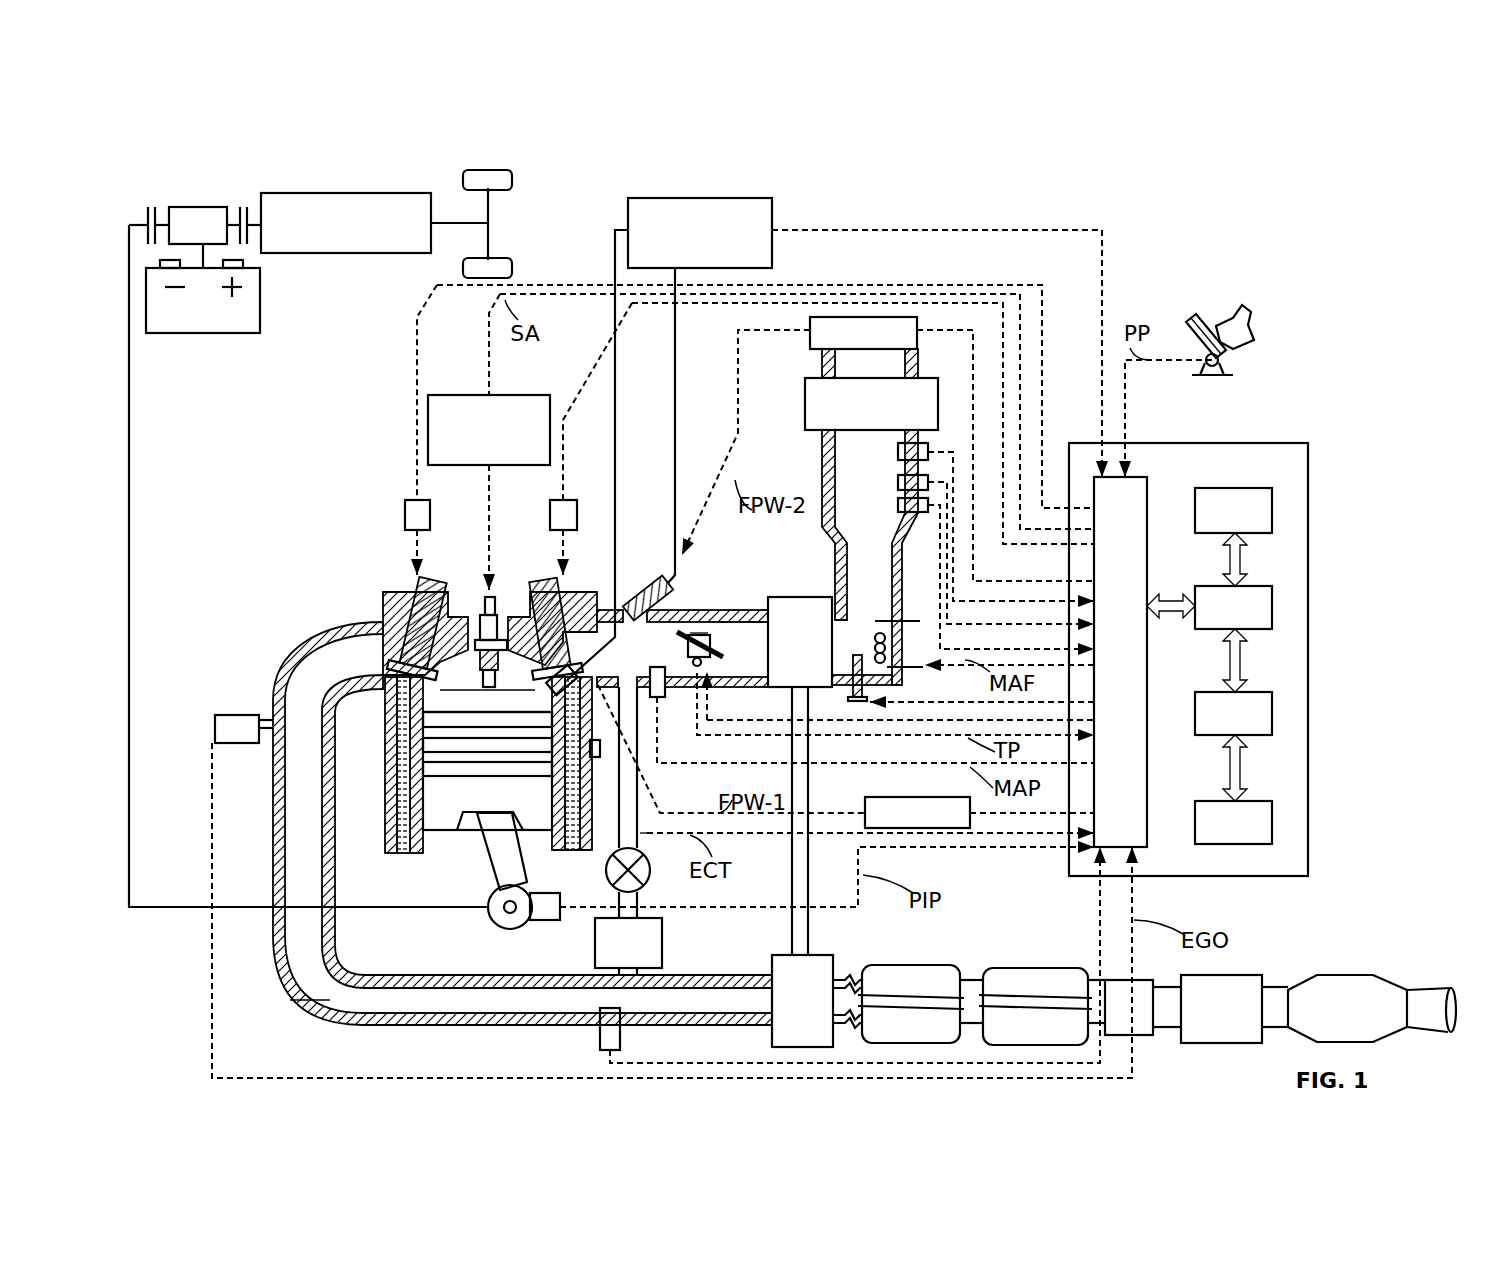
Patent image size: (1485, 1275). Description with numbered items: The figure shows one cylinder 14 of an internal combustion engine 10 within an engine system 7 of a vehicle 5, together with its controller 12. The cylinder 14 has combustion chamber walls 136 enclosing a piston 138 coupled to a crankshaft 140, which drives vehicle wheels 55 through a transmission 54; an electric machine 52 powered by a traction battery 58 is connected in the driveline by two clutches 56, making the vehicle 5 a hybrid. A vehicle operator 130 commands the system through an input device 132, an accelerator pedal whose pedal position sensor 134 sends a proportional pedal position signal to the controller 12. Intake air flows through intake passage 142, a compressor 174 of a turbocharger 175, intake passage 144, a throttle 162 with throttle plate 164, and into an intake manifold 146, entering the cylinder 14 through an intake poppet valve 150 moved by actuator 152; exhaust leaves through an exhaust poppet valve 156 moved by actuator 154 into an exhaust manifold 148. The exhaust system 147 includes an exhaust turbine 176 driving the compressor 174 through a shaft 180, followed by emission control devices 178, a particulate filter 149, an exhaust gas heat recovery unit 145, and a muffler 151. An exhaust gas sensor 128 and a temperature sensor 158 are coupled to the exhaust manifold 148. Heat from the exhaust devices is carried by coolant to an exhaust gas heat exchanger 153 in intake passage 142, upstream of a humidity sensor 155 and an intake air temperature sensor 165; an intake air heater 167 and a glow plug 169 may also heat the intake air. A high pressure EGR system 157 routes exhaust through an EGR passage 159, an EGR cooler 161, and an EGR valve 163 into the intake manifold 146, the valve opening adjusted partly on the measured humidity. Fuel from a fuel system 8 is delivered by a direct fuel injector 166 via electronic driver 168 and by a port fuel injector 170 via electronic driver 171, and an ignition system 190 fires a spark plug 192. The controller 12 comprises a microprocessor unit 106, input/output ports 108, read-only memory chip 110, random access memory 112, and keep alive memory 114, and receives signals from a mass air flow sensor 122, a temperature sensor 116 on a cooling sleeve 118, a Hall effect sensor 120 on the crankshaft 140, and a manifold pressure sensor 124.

The vehicle 5 is at (1405, 229).
The engine system 7 is at (302, 452).
The fuel system 8 is at (735, 199).
The internal combustion engine 10 is at (318, 585).
The controller 12 is at (1308, 462).
The cylinder 14 is at (394, 707).
The electric machine 52 is at (206, 207).
The transmission 54 is at (412, 253).
The vehicle wheels 55 is at (510, 190).
The clutches 56 is at (145, 212).
The traction battery 58 is at (195, 333).
The microprocessor unit 106 is at (1272, 600).
The input/output ports 108 is at (1148, 500).
The read-only memory chip 110 is at (1272, 505).
The random access memory 112 is at (1272, 715).
The keep alive memory 114 is at (1272, 820).
The temperature sensor 116 is at (596, 757).
The cooling sleeve 118 is at (562, 855).
The Hall effect sensor 120 is at (543, 920).
The mass air flow sensor 122 is at (898, 505).
The MAP sensor 124 is at (660, 715).
The exhaust gas sensor 128 is at (215, 718).
The vehicle operator 130 is at (1252, 326).
The input device 132 is at (1195, 340).
The pedal position sensor 134 is at (1225, 362).
The combustion chamber walls 136 is at (428, 840).
The piston 138 is at (470, 797).
The crankshaft 140 is at (502, 928).
The intake passage 142 is at (870, 557).
The intake passage 144 is at (744, 641).
The exhaust gas heat recovery unit 145 is at (1221, 1009).
The intake manifold 146 is at (682, 648).
The exhaust system 147 is at (291, 1036).
The exhaust manifold 148 is at (522, 823).
The particulate filter 149 is at (1129, 1007).
The intake poppet valve 150 is at (528, 640).
The muffler 151 is at (1372, 1008).
The actuator 152 is at (550, 512).
The exhaust gas heat exchanger 153 is at (871, 404).
The actuator 154 is at (405, 505).
The humidity sensor 155 is at (898, 452).
The exhaust poppet valve 156 is at (450, 668).
The high pressure EGR system 157 is at (672, 870).
The temperature sensor 158 is at (598, 1035).
The EGR passage 159 is at (652, 765).
The EGR cooler 161 is at (628, 943).
The throttle 162 is at (715, 635).
The EGR valve 163 is at (610, 878).
The throttle plate 164 is at (700, 632).
The intake air temperature sensor 165 is at (898, 481).
The fuel injector 166 is at (562, 678).
The intake air heater 167 is at (920, 621).
The electronic driver 168 is at (952, 797).
The glow plug 169 is at (857, 655).
The fuel injector 170 is at (657, 598).
The electronic driver 171 is at (810, 335).
The compressor 174 is at (800, 642).
The turbocharger 175 is at (775, 862).
The exhaust turbine 176 is at (802, 1001).
The emission control devices 178 is at (915, 965).
The shaft 180 is at (810, 915).
The ignition system 190 is at (470, 395).
The spark plug 192 is at (485, 615).